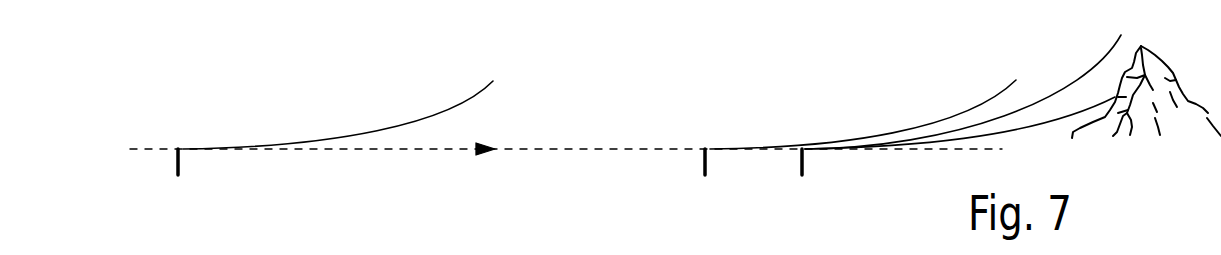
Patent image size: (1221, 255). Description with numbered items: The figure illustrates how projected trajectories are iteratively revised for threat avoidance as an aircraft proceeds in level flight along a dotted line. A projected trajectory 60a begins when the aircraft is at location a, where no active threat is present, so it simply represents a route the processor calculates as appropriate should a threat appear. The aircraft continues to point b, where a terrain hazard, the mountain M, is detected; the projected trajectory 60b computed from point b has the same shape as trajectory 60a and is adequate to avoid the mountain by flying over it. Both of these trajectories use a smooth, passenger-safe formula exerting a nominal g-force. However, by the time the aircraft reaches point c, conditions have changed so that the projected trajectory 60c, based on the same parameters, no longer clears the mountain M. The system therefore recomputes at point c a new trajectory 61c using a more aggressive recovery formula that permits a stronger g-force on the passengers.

The projected trajectory 60a is at (361, 133).
The projected trajectory 60b is at (837, 138).
The projected trajectory 60c is at (1043, 128).
The new trajectory 61c is at (1078, 76).
The mountain M is at (1172, 80).
The location a is at (177, 175).
The point b is at (705, 175).
The point c is at (802, 175).